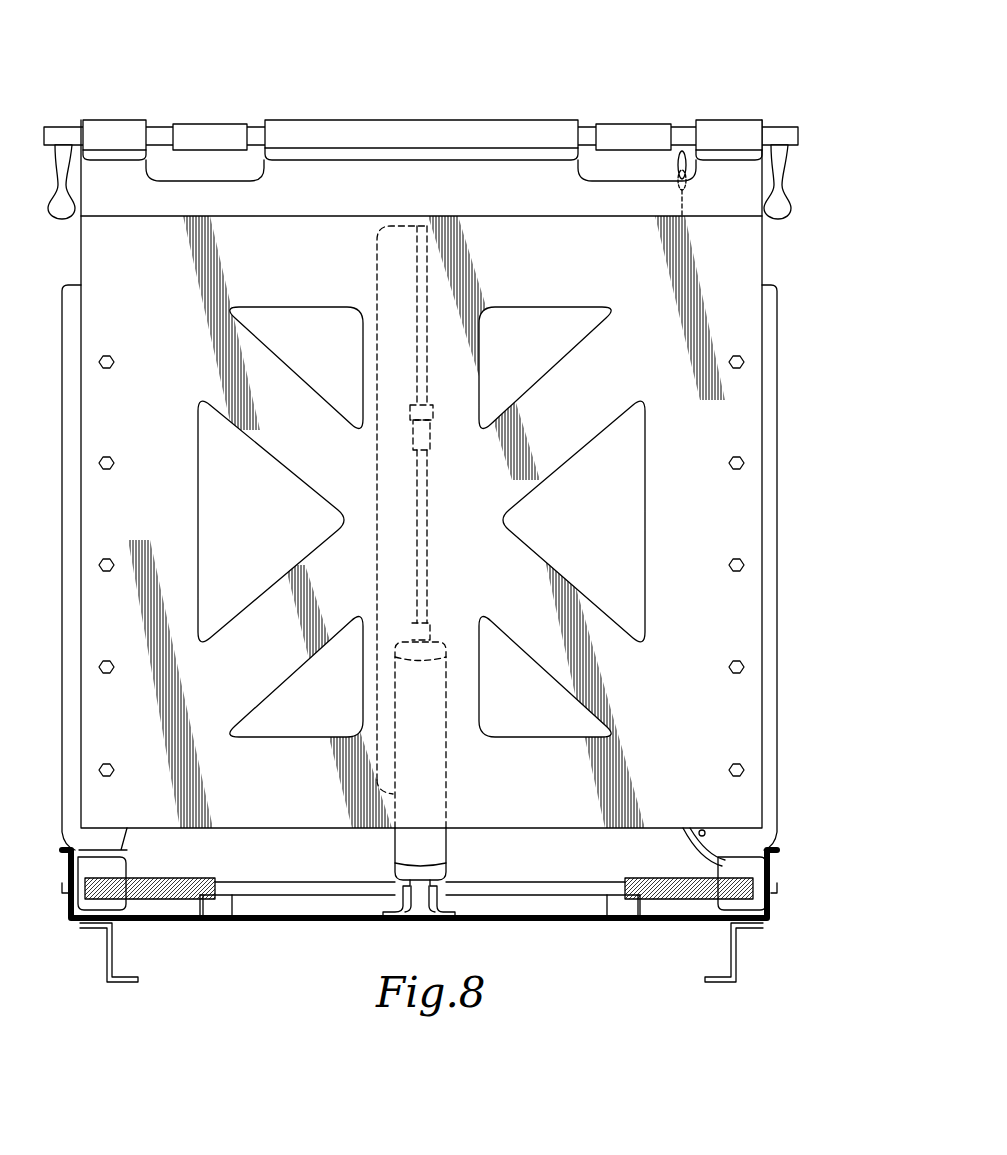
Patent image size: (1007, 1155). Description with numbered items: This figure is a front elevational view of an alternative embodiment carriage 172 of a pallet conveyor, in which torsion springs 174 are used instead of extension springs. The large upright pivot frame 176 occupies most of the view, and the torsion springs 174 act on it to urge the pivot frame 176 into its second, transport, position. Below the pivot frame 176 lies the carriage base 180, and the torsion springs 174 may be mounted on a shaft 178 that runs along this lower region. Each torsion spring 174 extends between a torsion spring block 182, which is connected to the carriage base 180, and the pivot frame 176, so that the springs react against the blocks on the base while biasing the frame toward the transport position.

The carriage 172 is at (638, 108).
The torsion springs 174 is at (145, 878).
The pivot frame 176 is at (742, 260).
The shaft 178 is at (495, 882).
The carriage base 180 is at (298, 922).
The torsion spring block 182 is at (232, 908).